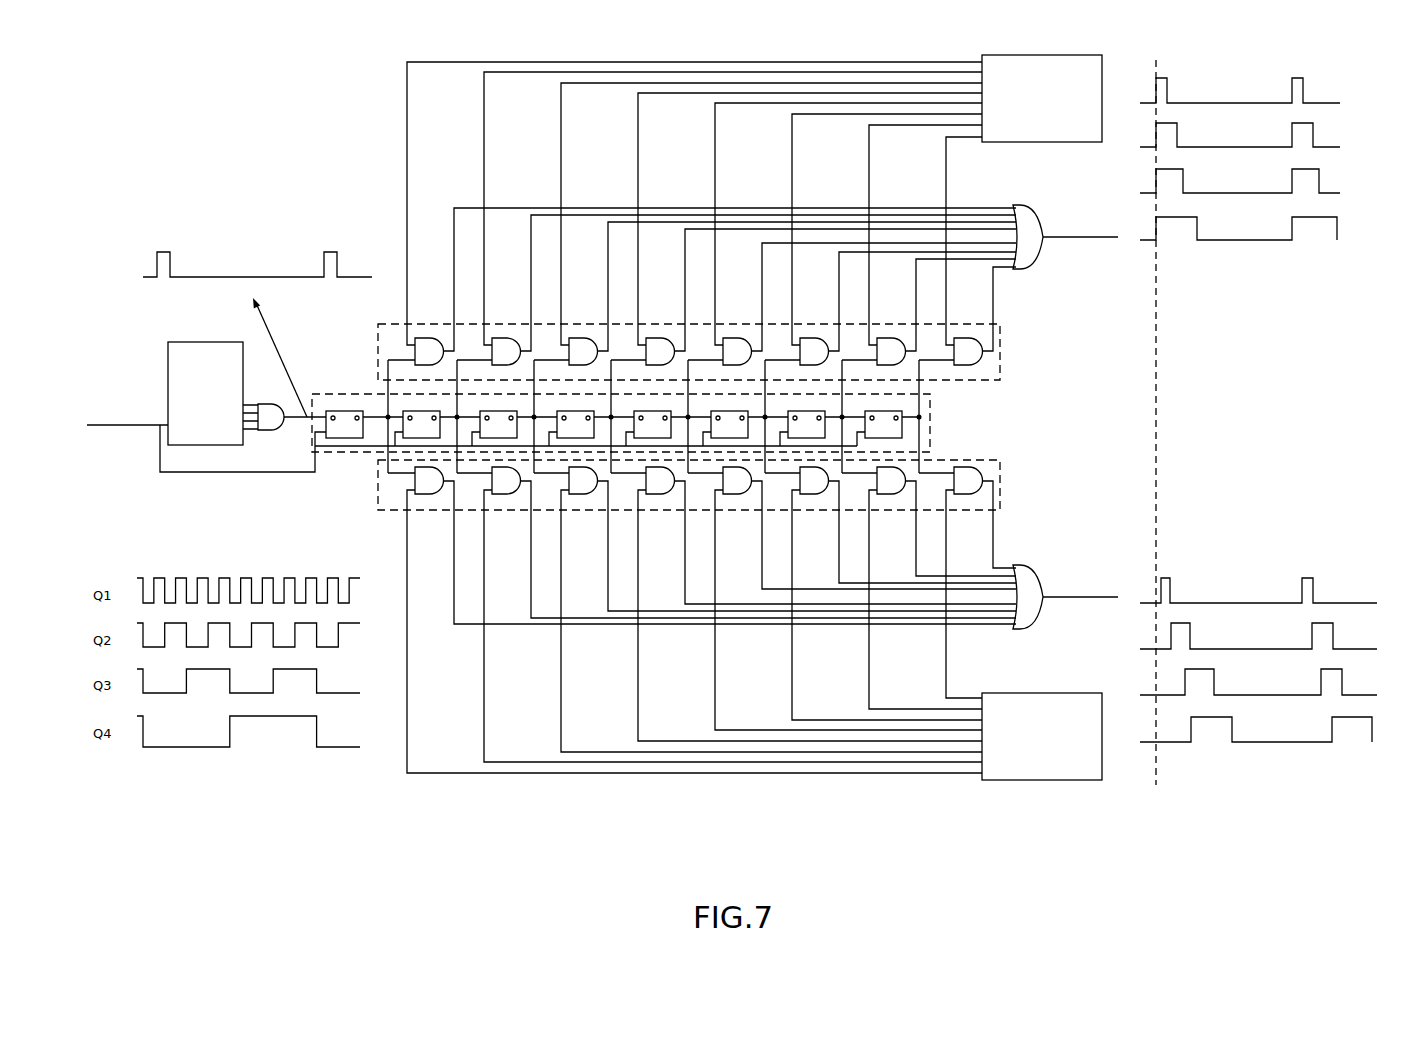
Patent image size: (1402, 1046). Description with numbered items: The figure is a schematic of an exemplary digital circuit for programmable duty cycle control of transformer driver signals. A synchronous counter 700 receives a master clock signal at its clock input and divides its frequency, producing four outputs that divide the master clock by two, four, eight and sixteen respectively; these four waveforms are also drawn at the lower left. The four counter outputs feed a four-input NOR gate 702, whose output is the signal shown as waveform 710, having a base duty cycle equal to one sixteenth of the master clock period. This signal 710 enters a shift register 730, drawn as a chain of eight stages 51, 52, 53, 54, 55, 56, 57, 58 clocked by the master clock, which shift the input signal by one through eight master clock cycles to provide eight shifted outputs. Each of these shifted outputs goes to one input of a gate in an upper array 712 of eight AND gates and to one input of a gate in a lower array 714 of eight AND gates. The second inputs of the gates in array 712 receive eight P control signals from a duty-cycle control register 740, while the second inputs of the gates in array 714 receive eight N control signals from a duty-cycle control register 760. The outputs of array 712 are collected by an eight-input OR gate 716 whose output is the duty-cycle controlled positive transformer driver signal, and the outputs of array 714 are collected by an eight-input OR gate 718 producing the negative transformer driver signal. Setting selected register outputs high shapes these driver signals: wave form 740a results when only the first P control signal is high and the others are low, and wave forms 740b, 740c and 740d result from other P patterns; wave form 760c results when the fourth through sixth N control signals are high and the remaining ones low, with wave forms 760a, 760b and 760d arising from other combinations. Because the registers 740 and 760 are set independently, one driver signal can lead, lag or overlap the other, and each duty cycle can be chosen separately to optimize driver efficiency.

The synchronous counter 700 is at (168, 376).
The four-input NOR gate 702 is at (278, 430).
The output signal waveform 710 is at (214, 215).
The array of eight AND gates 712 is at (1002, 351).
The array of eight AND gates 714 is at (1002, 492).
The eight-input OR gate 716 is at (1027, 254).
The eight-input OR gate 718 is at (1047, 558).
The shift register 730 is at (642, 461).
The duty-cycle control register 740 is at (1060, 143).
The wave form 740a is at (1248, 91).
The wave form 740b is at (1253, 135).
The wave form 740c is at (1252, 181).
The wave form 740d is at (1244, 239).
The duty-cycle control register 760 is at (1062, 693).
The wave form 760a is at (1258, 591).
The wave form 760b is at (1264, 636).
The wave form 760c is at (1266, 682).
The wave form 760d is at (1260, 740).
The flip-flop 51 is at (350, 461).
The flip-flop 52 is at (437, 418).
The flip-flop 53 is at (514, 418).
The flip-flop 54 is at (591, 418).
The flip-flop 55 is at (668, 418).
The flip-flop 56 is at (745, 418).
The flip-flop 57 is at (822, 418).
The flip-flop 58 is at (888, 418).